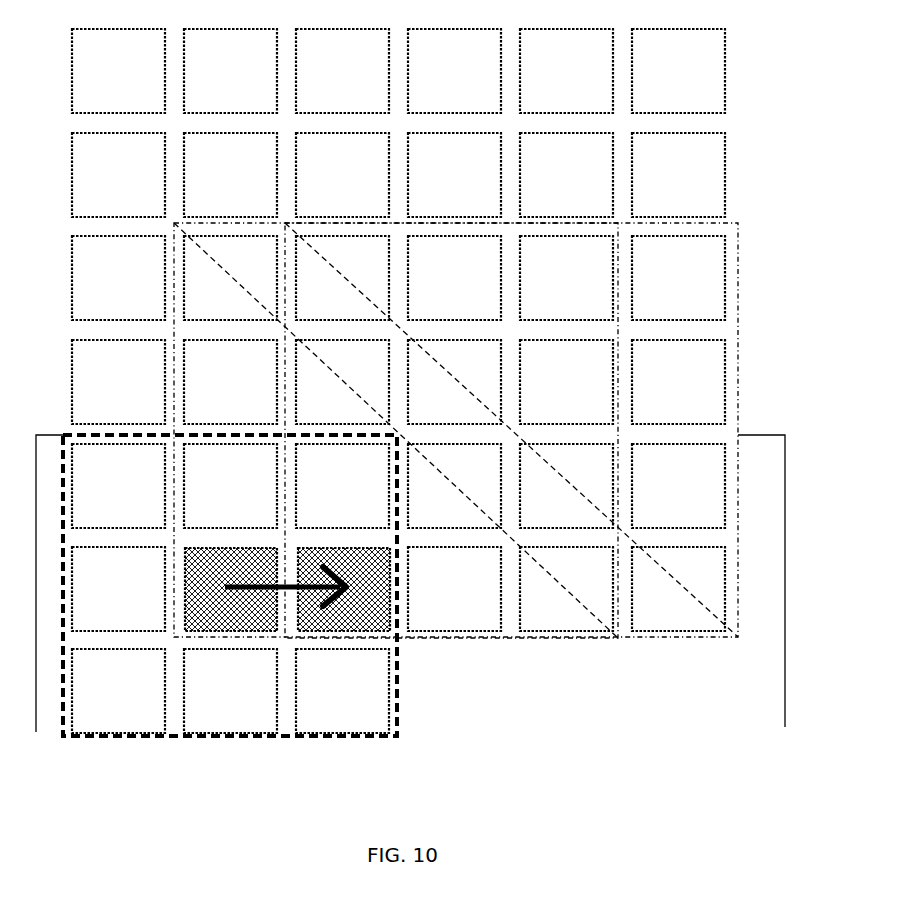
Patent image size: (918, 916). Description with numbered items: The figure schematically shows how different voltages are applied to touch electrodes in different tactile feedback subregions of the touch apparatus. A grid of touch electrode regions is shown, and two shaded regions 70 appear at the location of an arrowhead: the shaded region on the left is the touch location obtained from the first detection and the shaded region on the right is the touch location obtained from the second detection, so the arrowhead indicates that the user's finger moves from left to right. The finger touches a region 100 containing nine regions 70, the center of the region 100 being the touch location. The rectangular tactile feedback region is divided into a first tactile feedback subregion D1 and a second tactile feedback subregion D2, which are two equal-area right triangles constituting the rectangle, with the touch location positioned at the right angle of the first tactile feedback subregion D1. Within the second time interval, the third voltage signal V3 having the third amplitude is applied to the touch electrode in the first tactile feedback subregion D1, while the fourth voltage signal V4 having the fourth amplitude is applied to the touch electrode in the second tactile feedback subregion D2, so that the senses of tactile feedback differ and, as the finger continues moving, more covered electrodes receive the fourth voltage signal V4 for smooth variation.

The region 100 is at (218, 736).
The shaded region 70 is at (485, 608).
The first tactile feedback subregion D1 is at (552, 640).
The second tactile feedback subregion D2 is at (738, 327).
The third voltage signal V3 is at (39, 604).
The fourth voltage signal V4 is at (770, 602).